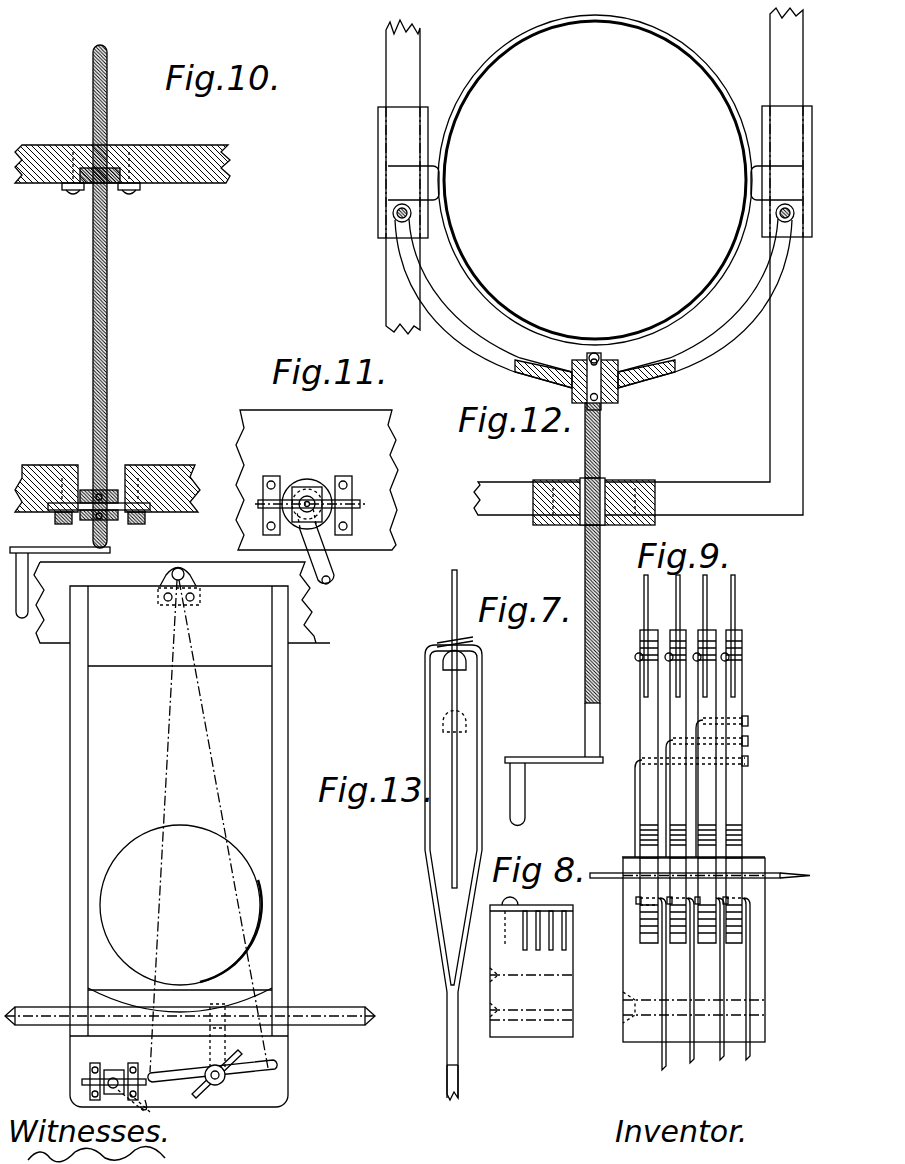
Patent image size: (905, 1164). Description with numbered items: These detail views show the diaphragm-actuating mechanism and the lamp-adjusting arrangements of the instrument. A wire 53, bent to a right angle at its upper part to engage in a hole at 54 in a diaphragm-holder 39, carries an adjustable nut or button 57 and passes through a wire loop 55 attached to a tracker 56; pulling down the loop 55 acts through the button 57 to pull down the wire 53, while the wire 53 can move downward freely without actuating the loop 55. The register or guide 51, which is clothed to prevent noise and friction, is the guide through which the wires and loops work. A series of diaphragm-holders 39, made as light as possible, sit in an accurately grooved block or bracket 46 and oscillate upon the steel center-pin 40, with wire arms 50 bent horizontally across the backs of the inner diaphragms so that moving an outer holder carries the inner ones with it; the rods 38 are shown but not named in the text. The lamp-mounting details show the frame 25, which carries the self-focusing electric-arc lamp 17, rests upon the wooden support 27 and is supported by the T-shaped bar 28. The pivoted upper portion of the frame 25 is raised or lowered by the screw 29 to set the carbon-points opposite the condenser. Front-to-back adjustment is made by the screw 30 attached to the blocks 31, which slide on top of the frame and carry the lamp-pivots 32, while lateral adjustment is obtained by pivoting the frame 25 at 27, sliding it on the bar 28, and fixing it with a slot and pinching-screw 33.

In FIG. 12, the self-focusing electric-arc lamp 17 is at (595, 180).
In FIG. 13, the self-focusing electric-arc lamp 17 is at (180, 918).
In FIG. 10, the frame 25 is at (180, 183).
In FIG. 11, the frame 25 is at (317, 480).
In FIG. 12, the frame 25 is at (414, 58).
In FIG. 13, the frame 25 is at (298, 862).
In FIG. 13, the wooden support 27 is at (210, 590).
In FIG. 13, the T-shaped bar 28 is at (340, 1025).
In FIG. 10, the screw 29 is at (92, 298).
In FIG. 11, the screw 29 is at (309, 500).
In FIG. 13, the screw 29 is at (85, 1082).
In FIG. 12, the screw 30 is at (598, 572).
In FIG. 12, the blocks 31 is at (393, 213).
In FIG. 12, the lamp-pivots 32 is at (595, 172).
In FIG. 13, the pinching-screw 33 is at (225, 1080).
In FIG. 9, the plunger rod 38 is at (690, 636).
In FIG. 9, the diaphragm-holders 39 is at (640, 732).
In FIG. 9, the steel center-pin 40 is at (695, 891).
In FIG. 9, the block or bracket 46 is at (693, 950).
In FIG. 9, the arms 50 is at (748, 720).
In FIG. 8, the register or guide 51 is at (531, 967).
In FIG. 7, the wires 53 is at (451, 729).
In FIG. 9, the wires 53 is at (706, 984).
In FIG. 9, the hole 54 is at (640, 902).
In FIG. 7, the wire loop 55 is at (440, 950).
In FIG. 7, the tracker 56 is at (469, 1081).
In FIG. 7, the nut or button 57 is at (466, 662).